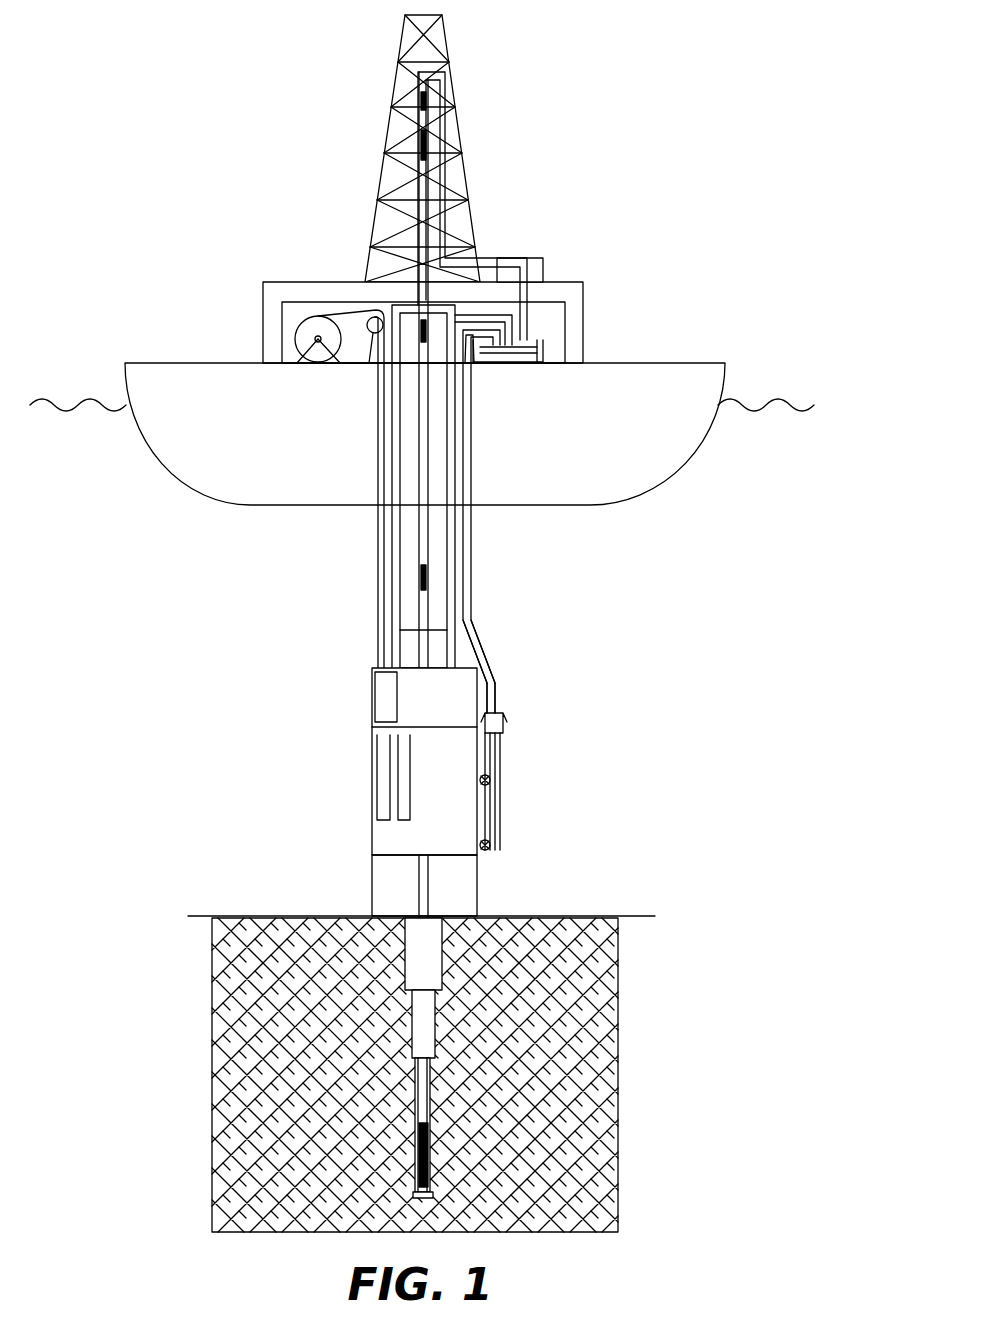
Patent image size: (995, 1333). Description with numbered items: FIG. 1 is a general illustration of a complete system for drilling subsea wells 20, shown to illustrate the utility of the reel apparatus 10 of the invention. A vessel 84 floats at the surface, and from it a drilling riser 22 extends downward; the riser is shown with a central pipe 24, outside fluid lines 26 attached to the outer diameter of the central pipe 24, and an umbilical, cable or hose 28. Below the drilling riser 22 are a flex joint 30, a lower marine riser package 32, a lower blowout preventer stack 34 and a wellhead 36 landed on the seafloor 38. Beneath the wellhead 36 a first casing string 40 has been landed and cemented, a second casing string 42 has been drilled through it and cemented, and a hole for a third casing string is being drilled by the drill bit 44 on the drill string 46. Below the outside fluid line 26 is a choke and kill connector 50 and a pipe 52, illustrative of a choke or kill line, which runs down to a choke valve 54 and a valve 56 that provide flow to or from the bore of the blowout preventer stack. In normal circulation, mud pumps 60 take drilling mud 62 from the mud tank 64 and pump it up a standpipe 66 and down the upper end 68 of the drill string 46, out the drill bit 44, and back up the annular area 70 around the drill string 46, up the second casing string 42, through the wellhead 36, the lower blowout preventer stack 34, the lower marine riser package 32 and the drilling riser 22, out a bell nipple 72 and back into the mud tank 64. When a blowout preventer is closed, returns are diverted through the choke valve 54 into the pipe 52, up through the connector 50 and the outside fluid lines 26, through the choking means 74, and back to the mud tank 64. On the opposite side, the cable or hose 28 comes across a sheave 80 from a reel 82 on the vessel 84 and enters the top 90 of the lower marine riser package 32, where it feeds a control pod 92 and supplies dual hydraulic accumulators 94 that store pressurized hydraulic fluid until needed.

The reel apparatus 10 is at (676, 81).
The system for drilling subsea wells 20 is at (683, 660).
The drilling riser 22 is at (683, 524).
The central pipe 24 is at (462, 584).
The outside fluid lines 26 is at (487, 655).
The umbilical, cable or hose 28 is at (475, 612).
The flex joint 30 is at (423, 649).
The lower marine riser package 32 is at (495, 690).
The lower blowout preventer stack 34 is at (372, 844).
The wellhead 36 is at (372, 884).
The seafloor 38 is at (505, 916).
The first casing string 40 is at (445, 972).
The second casing string 42 is at (435, 1017).
The drill bit 44 is at (435, 1192).
The drill string 46 is at (430, 549).
The choke and kill connector 50 is at (503, 720).
The pipe 52 is at (500, 747).
The choke valve 54 is at (490, 780).
The valve 56 is at (500, 830).
The mud pumps 60 is at (543, 268).
The drilling mud 62 is at (528, 362).
The mud tank 64 is at (545, 350).
The standpipe 66 is at (447, 140).
The upper end of the drill string 68 is at (432, 103).
The annular area 70 is at (435, 1060).
The bell nipple 72 is at (457, 313).
The choking means 74 is at (470, 335).
The sheave 80 is at (369, 350).
The reel 82 is at (316, 360).
The vessel 84 is at (425, 434).
The top of the lower marine riser package 90 is at (375, 668).
The control pod 92 is at (372, 692).
The dual hydraulic accumulators 94 is at (374, 771).